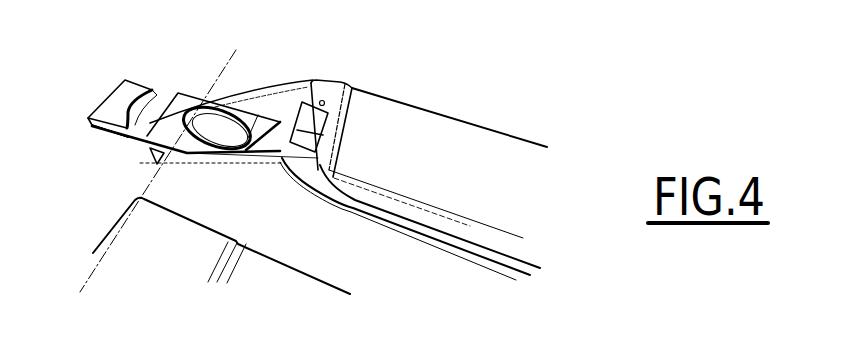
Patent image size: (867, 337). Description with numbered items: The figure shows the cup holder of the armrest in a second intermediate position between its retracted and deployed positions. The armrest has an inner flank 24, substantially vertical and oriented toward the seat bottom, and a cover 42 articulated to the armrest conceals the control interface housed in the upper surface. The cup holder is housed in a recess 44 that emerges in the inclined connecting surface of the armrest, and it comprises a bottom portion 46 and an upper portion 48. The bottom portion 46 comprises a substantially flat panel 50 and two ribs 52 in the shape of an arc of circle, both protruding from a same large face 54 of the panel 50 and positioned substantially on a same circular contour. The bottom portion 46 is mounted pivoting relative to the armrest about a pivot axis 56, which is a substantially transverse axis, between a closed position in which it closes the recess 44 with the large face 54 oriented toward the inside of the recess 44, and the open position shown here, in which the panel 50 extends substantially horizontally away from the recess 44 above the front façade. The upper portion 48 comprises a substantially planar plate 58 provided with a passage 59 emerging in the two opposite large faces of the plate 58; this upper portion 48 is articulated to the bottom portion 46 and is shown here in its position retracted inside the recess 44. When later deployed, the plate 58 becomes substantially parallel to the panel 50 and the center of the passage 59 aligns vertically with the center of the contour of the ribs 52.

The inner flank 24 is at (332, 257).
The cover 42 is at (485, 145).
The recess 44 is at (270, 107).
The bottom portion 46 is at (106, 96).
The upper portion 48 is at (240, 150).
The panel 50 is at (107, 130).
The ribs 52 is at (132, 95).
The large face 54 is at (140, 123).
The pivot axis 56 is at (230, 58).
The plate 58 is at (163, 167).
The passage 59 is at (188, 135).